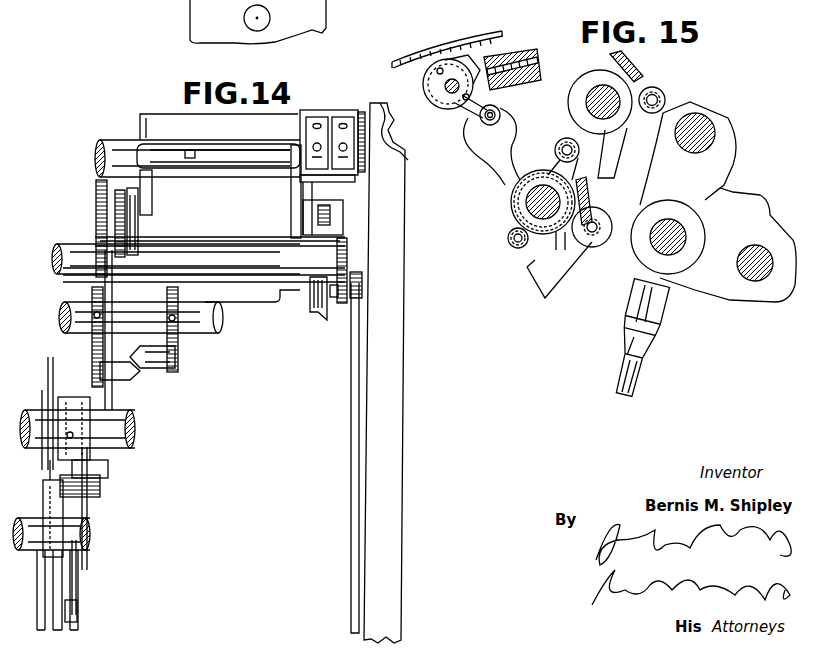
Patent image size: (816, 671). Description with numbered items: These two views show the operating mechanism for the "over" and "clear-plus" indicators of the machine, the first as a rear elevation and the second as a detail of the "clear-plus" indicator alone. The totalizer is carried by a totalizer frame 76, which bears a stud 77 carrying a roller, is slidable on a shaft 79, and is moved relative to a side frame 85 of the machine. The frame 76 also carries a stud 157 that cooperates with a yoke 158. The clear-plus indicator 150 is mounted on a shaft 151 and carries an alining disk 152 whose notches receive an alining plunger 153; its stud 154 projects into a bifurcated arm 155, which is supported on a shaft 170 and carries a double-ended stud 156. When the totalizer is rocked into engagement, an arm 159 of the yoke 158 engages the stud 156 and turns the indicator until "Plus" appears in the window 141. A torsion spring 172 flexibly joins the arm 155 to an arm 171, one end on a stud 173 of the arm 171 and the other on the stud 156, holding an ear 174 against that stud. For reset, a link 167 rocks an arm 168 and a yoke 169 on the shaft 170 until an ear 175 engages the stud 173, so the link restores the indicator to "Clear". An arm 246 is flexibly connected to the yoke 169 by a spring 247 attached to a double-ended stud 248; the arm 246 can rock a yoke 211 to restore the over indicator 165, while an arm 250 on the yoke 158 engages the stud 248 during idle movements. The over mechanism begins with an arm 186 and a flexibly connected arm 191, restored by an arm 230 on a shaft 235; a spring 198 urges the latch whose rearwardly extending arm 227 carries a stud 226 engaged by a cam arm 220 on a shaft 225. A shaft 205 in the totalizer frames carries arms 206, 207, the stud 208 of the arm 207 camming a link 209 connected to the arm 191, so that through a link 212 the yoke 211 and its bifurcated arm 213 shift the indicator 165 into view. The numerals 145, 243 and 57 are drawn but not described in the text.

In FIG. 14, the side frame 85 is at (402, 377).
In FIG. 14, the link 167 is at (352, 382).
In FIG. 15, the link 167 is at (530, 282).
In FIG. 14, the shaft 145 is at (122, 147).
In FIG. 15, the shaft 145 is at (590, 90).
In FIG. 14, the stud 157 is at (166, 147).
In FIG. 15, the stud 157 is at (656, 97).
In FIG. 14, the yoke 158 is at (155, 118).
In FIG. 15, the yoke 158 is at (636, 68).
In FIG. 14, the stud 248 is at (152, 197).
In FIG. 14, the yoke 211 is at (96, 217).
In FIG. 14, the arm 246 is at (125, 222).
In FIG. 14, the arm 250 is at (140, 230).
In FIG. 14, the bifurcated arm 213 is at (288, 212).
In FIG. 14, the yoke 169 is at (228, 243).
In FIG. 14, the arm 159 is at (296, 190).
In FIG. 15, the arm 159 is at (614, 167).
In FIG. 14, the over indicator 165 is at (310, 112).
In FIG. 14, the clear-plus indicator 150 is at (333, 115).
In FIG. 15, the clear-plus indicator 150 is at (462, 108).
In FIG. 14, the alining disk 152 is at (320, 180).
In FIG. 15, the alining disk 152 is at (462, 66).
In FIG. 14, the bifurcated arm 155 is at (315, 192).
In FIG. 15, the bifurcated arm 155 is at (518, 140).
In FIG. 14, the stud 156 is at (330, 214).
In FIG. 15, the stud 156 is at (560, 150).
In FIG. 14, the link 212 is at (122, 265).
In FIG. 14, the spring 247 is at (145, 270).
In FIG. 14, the arm 171 is at (322, 273).
In FIG. 15, the arm 171 is at (516, 212).
In FIG. 14, the torsion spring 172 is at (337, 242).
In FIG. 15, the torsion spring 172 is at (512, 198).
In FIG. 14, the shaft 170 is at (265, 305).
In FIG. 15, the shaft 170 is at (528, 212).
In FIG. 14, the ear 175 is at (314, 310).
In FIG. 15, the ear 175 is at (560, 278).
In FIG. 14, the arm 168 is at (350, 300).
In FIG. 14, the shaft 205 is at (210, 313).
In FIG. 15, the shaft 205 is at (752, 250).
In FIG. 14, the arm 207 is at (92, 346).
In FIG. 14, the gear 243 is at (172, 372).
In FIG. 14, the link 209 is at (112, 405).
In FIG. 14, the arm 206 is at (178, 356).
In FIG. 14, the stud 208 is at (132, 382).
In FIG. 14, the arm 186 is at (66, 395).
In FIG. 14, the shaft 235 is at (128, 420).
In FIG. 14, the arm 191 is at (52, 467).
In FIG. 14, the cam arm 220 is at (50, 497).
In FIG. 14, the stud 226 is at (95, 498).
In FIG. 14, the arm 230 is at (88, 512).
In FIG. 14, the shaft 225 is at (28, 552).
In FIG. 14, the arm 227 is at (76, 572).
In FIG. 14, the spring 198 is at (75, 620).
In FIG. 15, the window 141 is at (448, 48).
In FIG. 15, the shaft 151 is at (445, 86).
In FIG. 15, the alining plunger 153 is at (503, 58).
In FIG. 15, the stud 154 is at (485, 125).
In FIG. 15, the totalizer frame 76 is at (725, 155).
In FIG. 15, the shaft 79 is at (695, 155).
In FIG. 15, the shaft 57 is at (660, 222).
In FIG. 15, the stud 77 is at (622, 362).
In FIG. 15, the stud 173 is at (510, 244).
In FIG. 15, the ear 174 is at (592, 190).